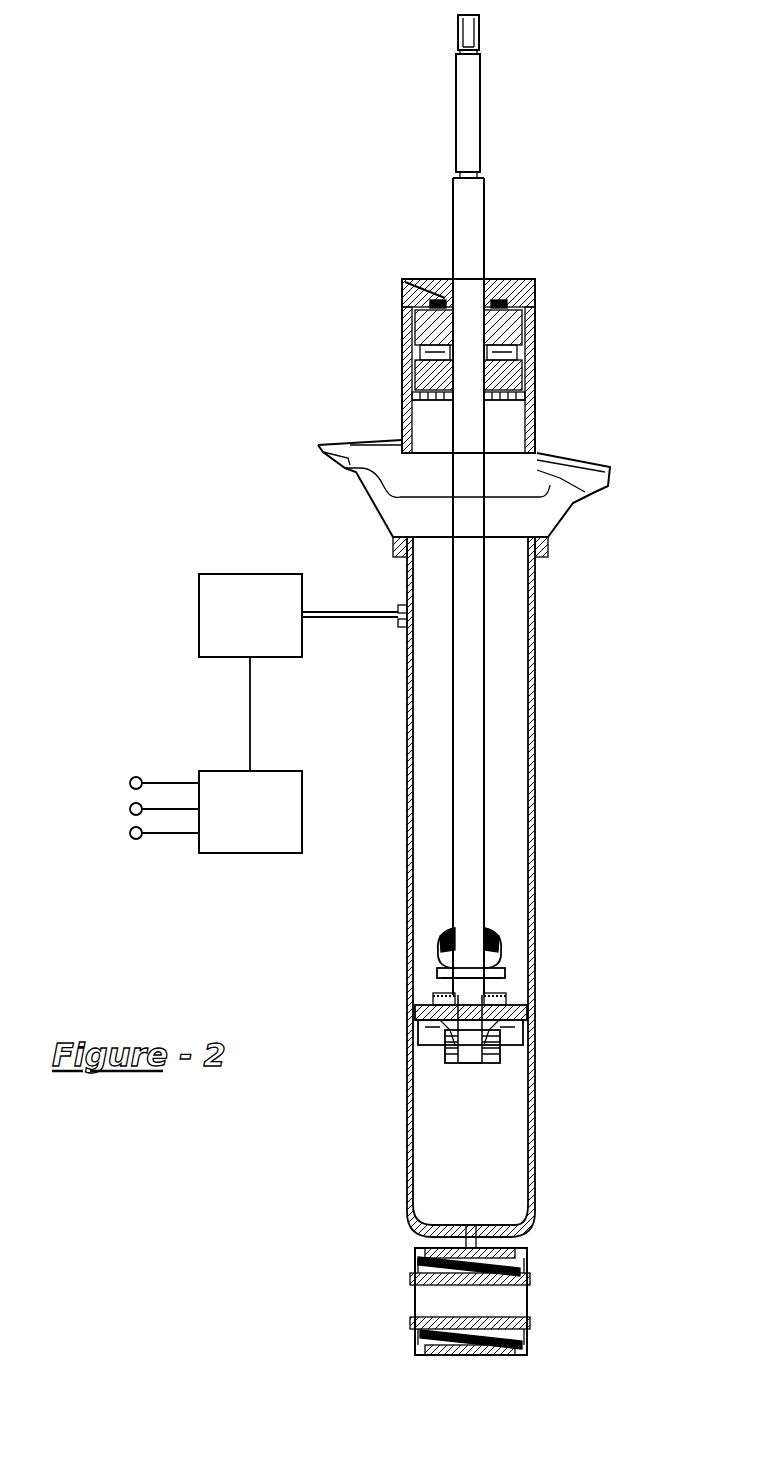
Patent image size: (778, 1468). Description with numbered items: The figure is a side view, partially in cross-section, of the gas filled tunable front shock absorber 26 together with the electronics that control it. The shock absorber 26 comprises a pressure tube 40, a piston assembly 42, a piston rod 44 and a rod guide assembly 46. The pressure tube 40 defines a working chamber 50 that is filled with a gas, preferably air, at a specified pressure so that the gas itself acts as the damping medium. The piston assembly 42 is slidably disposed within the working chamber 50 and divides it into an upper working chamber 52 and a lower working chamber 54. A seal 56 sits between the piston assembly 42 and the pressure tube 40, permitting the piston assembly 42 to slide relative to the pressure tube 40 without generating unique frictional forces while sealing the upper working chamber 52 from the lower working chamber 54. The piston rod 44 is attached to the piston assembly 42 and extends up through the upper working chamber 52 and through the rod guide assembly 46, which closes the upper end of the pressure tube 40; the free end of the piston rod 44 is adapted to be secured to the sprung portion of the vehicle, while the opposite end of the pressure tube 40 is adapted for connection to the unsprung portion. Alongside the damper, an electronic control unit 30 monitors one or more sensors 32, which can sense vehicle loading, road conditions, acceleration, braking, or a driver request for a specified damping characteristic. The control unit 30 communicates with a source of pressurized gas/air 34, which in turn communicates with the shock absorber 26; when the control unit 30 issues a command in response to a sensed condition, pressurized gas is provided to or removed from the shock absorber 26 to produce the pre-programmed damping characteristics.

The front shock absorber 26 is at (255, 214).
The electronic control unit 30 is at (271, 820).
The sensors 32 is at (130, 810).
The source of pressurized gas/air 34 is at (270, 626).
The pressure tube 40 is at (532, 713).
The piston assembly 42 is at (520, 1008).
The piston rod 44 is at (468, 222).
The rod guide assembly 46 is at (535, 342).
The working chamber 50 is at (462, 1114).
The upper working chamber 52 is at (505, 868).
The lower working chamber 54 is at (492, 1178).
The seal 56 is at (413, 1020).